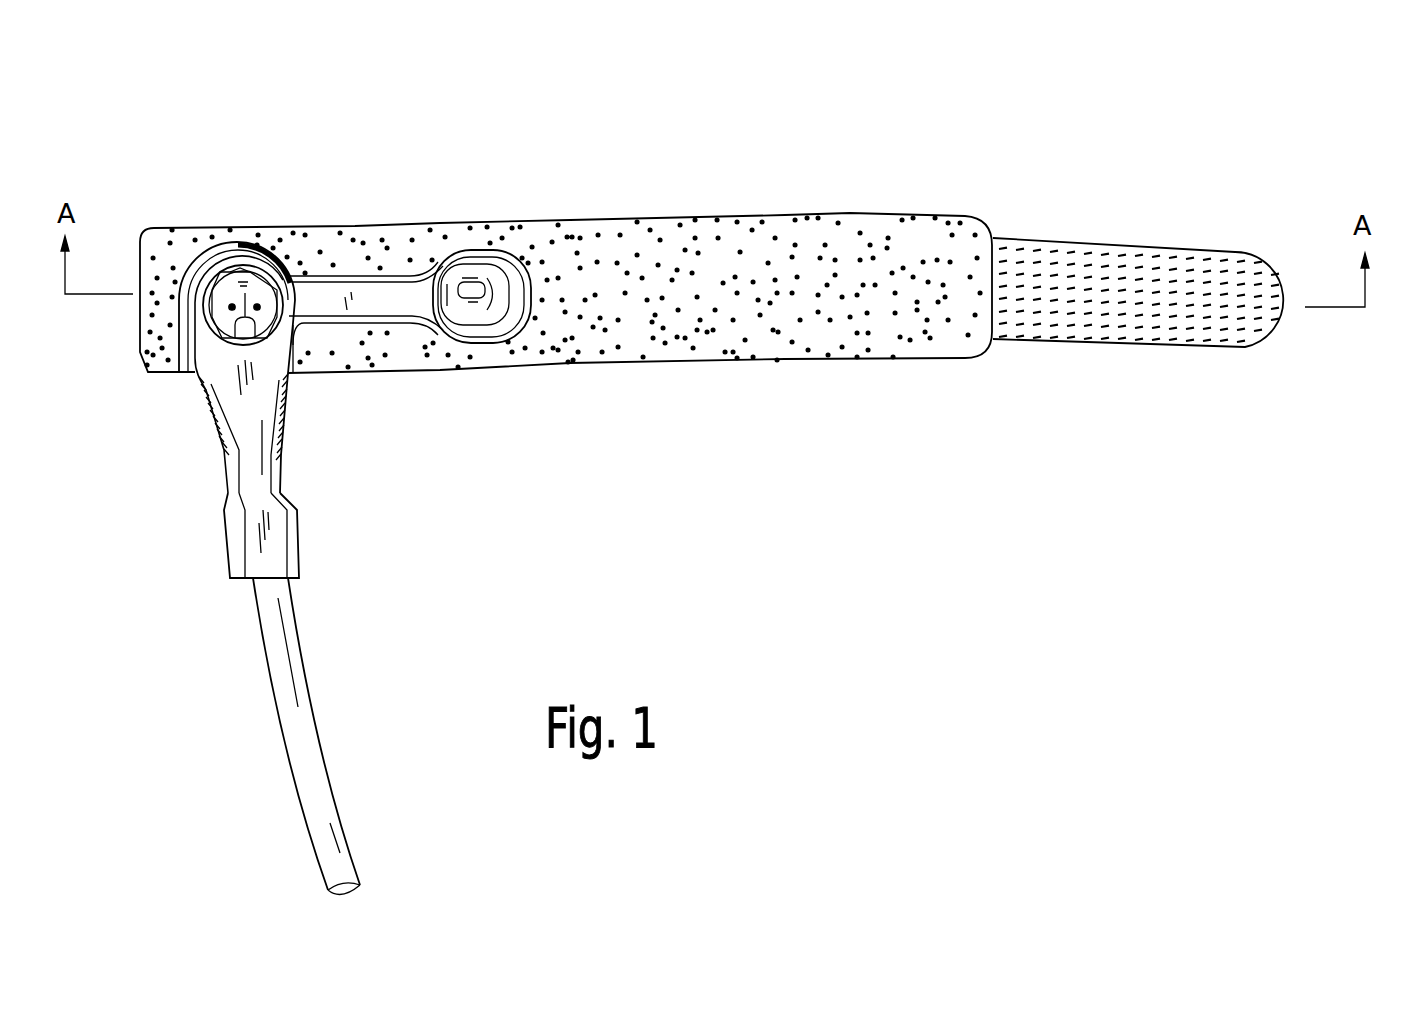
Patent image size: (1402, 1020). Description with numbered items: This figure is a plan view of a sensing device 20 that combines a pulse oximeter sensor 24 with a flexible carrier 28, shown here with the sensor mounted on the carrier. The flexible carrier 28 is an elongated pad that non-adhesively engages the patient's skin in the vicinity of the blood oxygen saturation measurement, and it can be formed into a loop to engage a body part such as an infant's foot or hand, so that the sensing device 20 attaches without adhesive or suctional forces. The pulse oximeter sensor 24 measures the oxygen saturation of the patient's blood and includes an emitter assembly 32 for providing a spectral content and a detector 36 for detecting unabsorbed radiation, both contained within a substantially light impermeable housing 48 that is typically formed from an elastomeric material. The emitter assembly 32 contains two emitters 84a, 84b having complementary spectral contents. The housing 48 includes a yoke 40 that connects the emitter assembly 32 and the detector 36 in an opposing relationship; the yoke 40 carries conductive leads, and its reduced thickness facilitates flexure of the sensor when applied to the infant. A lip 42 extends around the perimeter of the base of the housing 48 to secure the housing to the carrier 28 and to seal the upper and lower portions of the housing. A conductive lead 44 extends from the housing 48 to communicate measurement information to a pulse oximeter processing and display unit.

The sensing device 20 is at (682, 126).
The pulse oximeter sensor 24 is at (353, 252).
The flexible carrier 28 is at (856, 197).
The emitter assembly 32 is at (235, 270).
The detector 36 is at (483, 256).
The yoke 40 is at (363, 316).
The lip 42 is at (225, 466).
The conductive lead 44 is at (313, 711).
The housing 48 is at (203, 398).
The emitter 84a is at (231, 304).
The emitter 84b is at (258, 304).